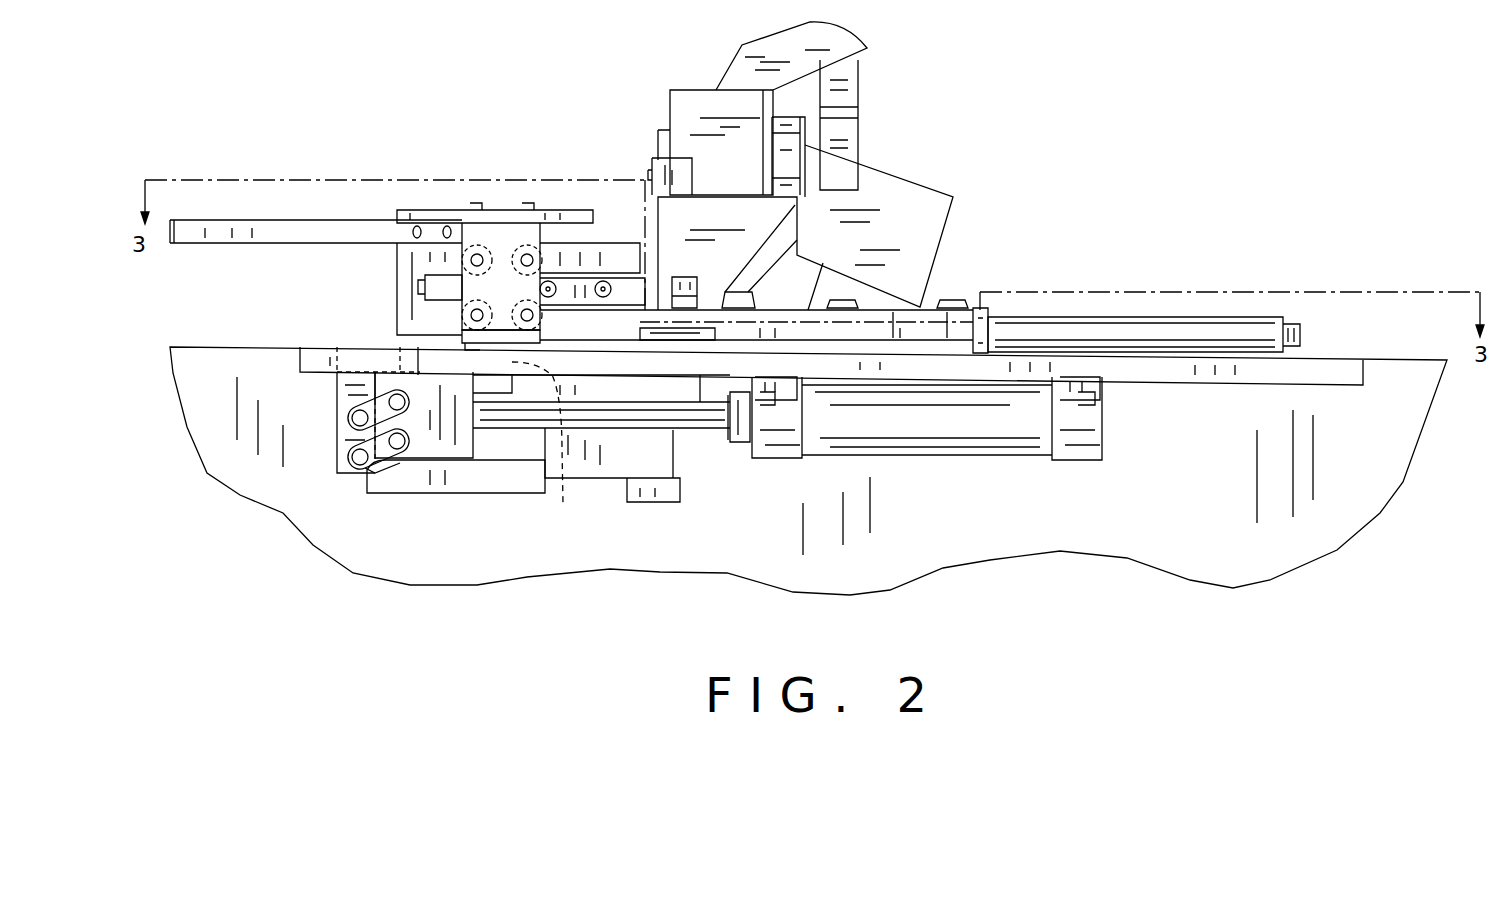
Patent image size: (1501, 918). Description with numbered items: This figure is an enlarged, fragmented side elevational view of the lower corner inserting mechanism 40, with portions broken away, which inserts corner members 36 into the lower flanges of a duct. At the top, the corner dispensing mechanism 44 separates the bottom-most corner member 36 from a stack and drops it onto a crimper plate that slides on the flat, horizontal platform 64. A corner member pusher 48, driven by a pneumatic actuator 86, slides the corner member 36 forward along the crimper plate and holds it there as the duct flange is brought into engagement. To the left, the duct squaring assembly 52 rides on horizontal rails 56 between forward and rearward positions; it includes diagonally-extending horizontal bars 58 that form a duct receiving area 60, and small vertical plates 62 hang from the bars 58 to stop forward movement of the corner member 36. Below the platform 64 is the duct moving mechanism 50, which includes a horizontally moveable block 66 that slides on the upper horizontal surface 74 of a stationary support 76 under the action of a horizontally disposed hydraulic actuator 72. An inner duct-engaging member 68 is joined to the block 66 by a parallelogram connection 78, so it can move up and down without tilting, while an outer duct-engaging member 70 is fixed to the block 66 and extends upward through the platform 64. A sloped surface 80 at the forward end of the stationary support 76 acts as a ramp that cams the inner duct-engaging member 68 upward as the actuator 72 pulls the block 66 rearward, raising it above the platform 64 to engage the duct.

The corner member 36 is at (672, 333).
The lower corner inserting mechanism 40 is at (1045, 206).
The corner dispensing mechanism 44 is at (690, 75).
The corner member pusher 48 is at (935, 325).
The duct moving mechanism 50 is at (613, 440).
The duct squaring assembly 52 is at (428, 204).
The horizontal rails 56 is at (597, 280).
The diagonally-extending horizontal bars 58 is at (290, 228).
The duct receiving area 60 is at (399, 289).
The vertical plates 62 is at (405, 270).
The horizontal platform 64 is at (215, 345).
The horizontally moveable block 66 is at (458, 440).
The inner duct-engaging member 68 is at (345, 390).
The outer duct-engaging member 70 is at (546, 447).
The hydraulic actuator 72 is at (943, 457).
The upper horizontal surface 74 is at (510, 443).
The stationary support 76 is at (400, 478).
The parallelogram connection 78 is at (352, 458).
The sloped surface 80 is at (348, 467).
The pneumatic actuator 86 is at (1090, 310).